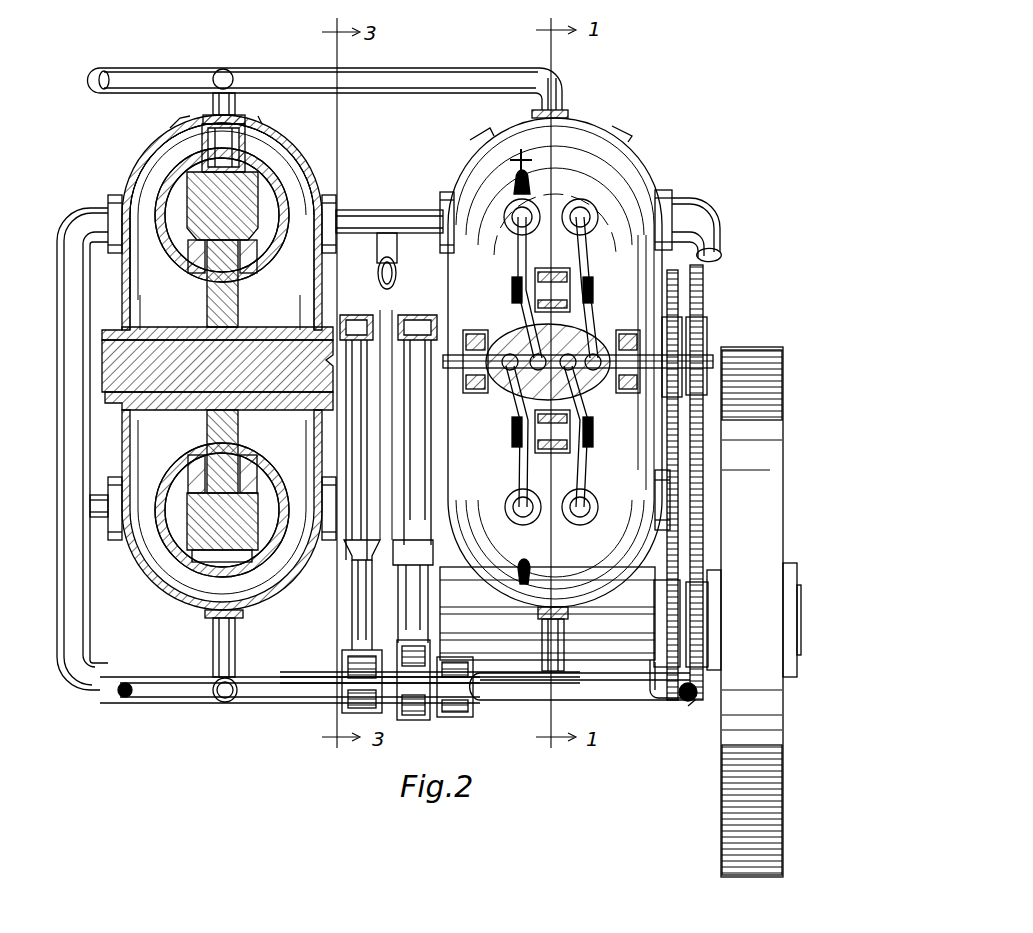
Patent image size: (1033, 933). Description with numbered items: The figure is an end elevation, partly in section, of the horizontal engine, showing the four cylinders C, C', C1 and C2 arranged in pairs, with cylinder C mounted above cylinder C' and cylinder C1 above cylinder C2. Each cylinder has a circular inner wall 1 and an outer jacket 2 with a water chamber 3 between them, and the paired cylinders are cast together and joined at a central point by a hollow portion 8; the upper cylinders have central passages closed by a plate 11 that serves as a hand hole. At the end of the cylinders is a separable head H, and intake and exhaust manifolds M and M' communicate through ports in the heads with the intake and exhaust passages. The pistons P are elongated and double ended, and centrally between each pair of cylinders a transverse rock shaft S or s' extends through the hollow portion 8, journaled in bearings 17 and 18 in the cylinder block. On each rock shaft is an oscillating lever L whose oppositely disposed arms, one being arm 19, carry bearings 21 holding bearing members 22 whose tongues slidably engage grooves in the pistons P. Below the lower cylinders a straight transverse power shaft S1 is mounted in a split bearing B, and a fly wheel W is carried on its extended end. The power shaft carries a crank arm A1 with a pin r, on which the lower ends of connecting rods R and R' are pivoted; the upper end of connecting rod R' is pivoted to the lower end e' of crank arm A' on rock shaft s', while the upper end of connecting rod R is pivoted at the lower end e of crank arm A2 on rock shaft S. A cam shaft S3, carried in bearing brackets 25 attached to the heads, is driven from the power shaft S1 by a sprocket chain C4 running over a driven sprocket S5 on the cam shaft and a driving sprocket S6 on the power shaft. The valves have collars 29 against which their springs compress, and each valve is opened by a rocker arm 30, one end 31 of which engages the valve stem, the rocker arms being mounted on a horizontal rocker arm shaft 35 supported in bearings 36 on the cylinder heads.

The circular inner wall 1 is at (165, 182).
The outer jacket 2 is at (168, 150).
The water chamber 3 is at (160, 172).
The hollow portion 8 is at (195, 310).
The plate 11 is at (252, 120).
The bearing 17 is at (105, 340).
The bearing 18 is at (345, 300).
The lever arm 19 is at (578, 516).
The bearing 21 is at (250, 163).
The bearing member 22 is at (282, 182).
The bearing bracket 25 is at (472, 340).
The collar 29 is at (576, 208).
The rocker arm 30 is at (530, 258).
The rocker arm end 31 is at (570, 230).
The rocker arm shaft 35 is at (590, 320).
The bearing 36 is at (567, 272).
The crank arm A' is at (417, 400).
The crank arm A1 is at (450, 718).
The crank arm A2 is at (368, 315).
The split bearing B is at (520, 702).
The cylinder C is at (219, 227).
The cylinder C' is at (222, 543).
The cylinder C1 is at (559, 305).
The cylinder C2 is at (551, 585).
The sprocket chain C4 is at (708, 475).
The lower end of crank arm e is at (350, 555).
The lower end of crank arm e' is at (423, 552).
The separable head H is at (590, 165).
The oscillating lever L is at (205, 417).
The intake manifold M is at (376, 379).
The exhaust manifold M' is at (290, 704).
The piston P is at (195, 192).
The connecting rod R is at (338, 605).
The connecting rod R' is at (431, 604).
The rock shaft S is at (102, 368).
The power shaft S1 is at (660, 680).
The cam shaft S3 is at (690, 358).
The driven sprocket S5 is at (700, 325).
The driving sprocket S6 is at (700, 718).
The fly wheel W is at (740, 738).
The pin r is at (342, 660).
The rock shaft s' is at (401, 425).